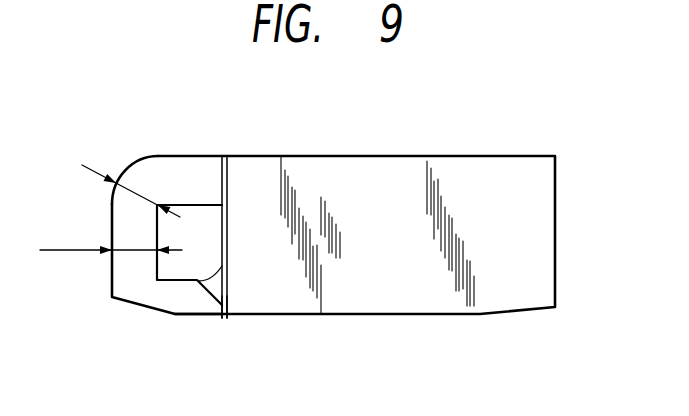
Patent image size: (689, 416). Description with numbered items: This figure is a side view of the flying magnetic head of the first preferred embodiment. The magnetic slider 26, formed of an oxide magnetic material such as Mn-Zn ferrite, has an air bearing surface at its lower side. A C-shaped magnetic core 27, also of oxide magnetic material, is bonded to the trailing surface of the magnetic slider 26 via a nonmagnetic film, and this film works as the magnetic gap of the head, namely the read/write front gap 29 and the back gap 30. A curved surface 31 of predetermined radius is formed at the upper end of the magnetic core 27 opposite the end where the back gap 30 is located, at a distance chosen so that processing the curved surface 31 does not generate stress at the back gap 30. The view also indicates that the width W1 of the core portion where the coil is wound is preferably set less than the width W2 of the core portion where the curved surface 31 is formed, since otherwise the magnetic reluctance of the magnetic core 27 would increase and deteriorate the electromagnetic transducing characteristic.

The magnetic slider 26 is at (480, 300).
The magnetic core 27 is at (122, 272).
The read/write front gap 29 is at (223, 315).
The back gap 30 is at (225, 156).
The curved surface 31 is at (140, 156).
The width of core portion where coil is wound W1 is at (108, 236).
The width of core portion where curved surface is formed W2 is at (118, 175).